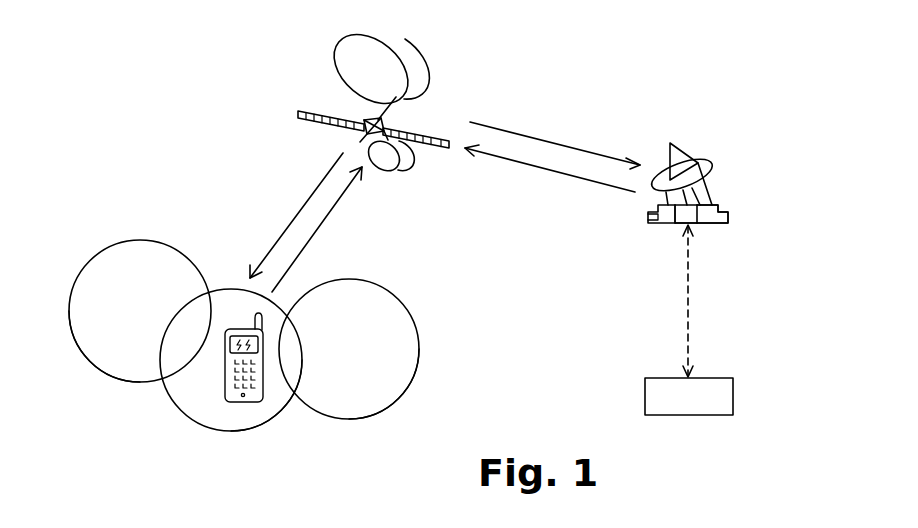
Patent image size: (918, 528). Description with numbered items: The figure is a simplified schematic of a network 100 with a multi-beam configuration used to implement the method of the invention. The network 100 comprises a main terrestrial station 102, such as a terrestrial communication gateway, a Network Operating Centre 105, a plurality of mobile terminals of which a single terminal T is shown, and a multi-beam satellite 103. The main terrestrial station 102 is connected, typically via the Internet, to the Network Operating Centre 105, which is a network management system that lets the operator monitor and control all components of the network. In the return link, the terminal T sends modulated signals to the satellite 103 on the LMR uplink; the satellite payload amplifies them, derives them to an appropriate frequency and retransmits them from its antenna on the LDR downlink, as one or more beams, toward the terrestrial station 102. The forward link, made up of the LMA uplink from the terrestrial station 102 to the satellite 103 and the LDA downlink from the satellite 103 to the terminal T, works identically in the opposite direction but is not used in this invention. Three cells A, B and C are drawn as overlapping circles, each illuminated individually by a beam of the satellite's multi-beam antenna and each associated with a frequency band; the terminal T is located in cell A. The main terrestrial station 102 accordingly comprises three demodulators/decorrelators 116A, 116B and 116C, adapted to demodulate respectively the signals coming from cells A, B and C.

The network 100 is at (240, 162).
The multi-beam satellite 103 is at (357, 70).
The main terrestrial station 102 is at (700, 160).
The Network Operating Centre (NOC) 105 is at (718, 320).
The demodulator/decorrelator 116A is at (648, 217).
The demodulator/decorrelator 116B is at (682, 223).
The demodulator/decorrelator 116C is at (710, 223).
The LDA downlink LDA is at (298, 208).
The LMR uplink LMR is at (325, 212).
The LDR downlink LDR is at (558, 147).
The LMA uplink LMA is at (547, 172).
The terminal T is at (235, 402).
The cell A is at (272, 422).
The cell B is at (343, 418).
The cell C is at (128, 382).